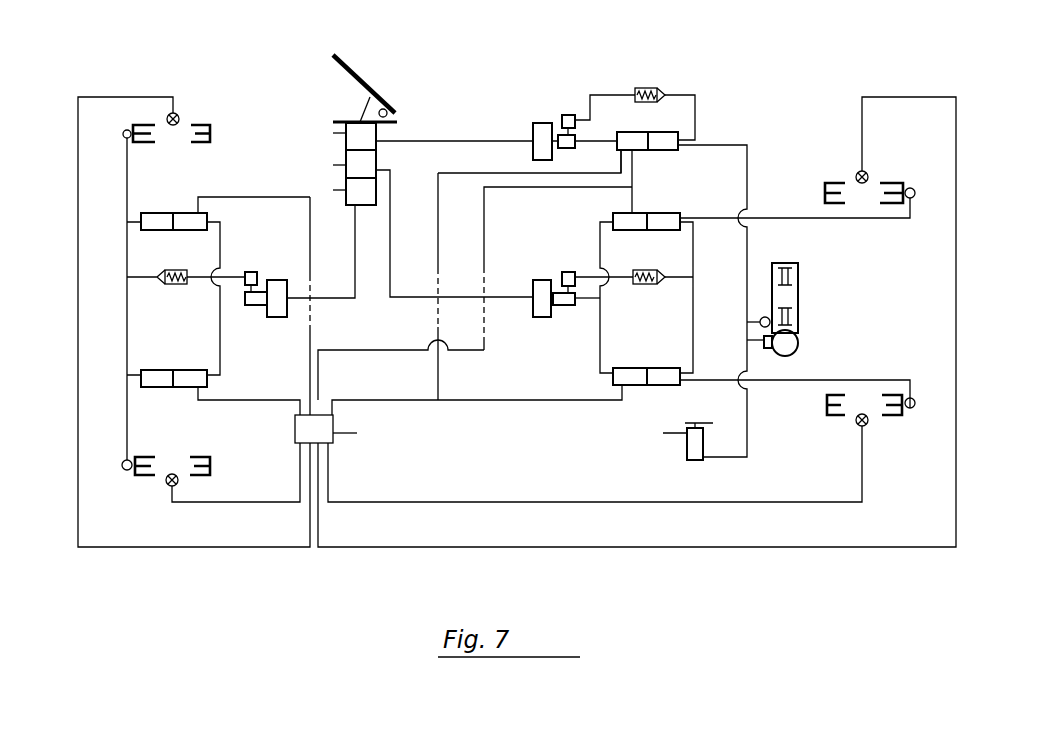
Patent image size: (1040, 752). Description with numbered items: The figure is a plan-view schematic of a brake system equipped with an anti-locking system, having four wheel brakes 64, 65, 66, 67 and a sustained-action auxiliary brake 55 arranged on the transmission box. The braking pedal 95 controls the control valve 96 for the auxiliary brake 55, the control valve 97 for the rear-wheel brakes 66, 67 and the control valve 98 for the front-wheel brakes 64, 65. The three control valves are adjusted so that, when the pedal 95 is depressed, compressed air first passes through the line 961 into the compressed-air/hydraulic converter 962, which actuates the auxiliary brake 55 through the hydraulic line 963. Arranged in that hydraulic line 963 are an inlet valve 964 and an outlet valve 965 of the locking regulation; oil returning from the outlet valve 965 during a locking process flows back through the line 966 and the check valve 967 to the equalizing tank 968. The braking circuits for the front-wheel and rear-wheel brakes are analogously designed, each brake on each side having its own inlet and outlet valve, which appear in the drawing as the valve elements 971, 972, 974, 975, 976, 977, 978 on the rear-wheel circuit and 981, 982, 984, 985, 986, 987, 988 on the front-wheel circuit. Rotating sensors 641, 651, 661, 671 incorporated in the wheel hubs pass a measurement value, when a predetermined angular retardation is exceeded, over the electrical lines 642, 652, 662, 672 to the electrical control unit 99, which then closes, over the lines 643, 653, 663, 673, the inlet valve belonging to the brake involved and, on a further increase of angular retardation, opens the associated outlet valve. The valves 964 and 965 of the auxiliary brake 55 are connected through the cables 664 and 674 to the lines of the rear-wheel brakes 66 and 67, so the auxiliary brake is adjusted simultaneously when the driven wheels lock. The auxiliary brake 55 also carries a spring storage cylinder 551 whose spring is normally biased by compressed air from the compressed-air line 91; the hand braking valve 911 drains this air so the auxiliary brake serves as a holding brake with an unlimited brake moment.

The auxiliary brake 55 is at (800, 295).
The spring storage cylinder 551 is at (800, 347).
The wheel brake 64 is at (203, 142).
The rotating sensor 641 is at (177, 116).
The electrical line 642 is at (78, 300).
The line 643 is at (237, 198).
The wheel brake 65 is at (190, 467).
The rotating sensor 651 is at (170, 486).
The electrical line 652 is at (246, 502).
The line 653 is at (240, 400).
The rear-wheel brake 66 is at (840, 183).
The rotating sensor 661 is at (868, 173).
The electrical line 662 is at (957, 396).
The line 663 is at (347, 352).
The cable 664 is at (632, 190).
The rear-wheel brake 67 is at (833, 417).
The rotating sensor 671 is at (855, 425).
The electrical line 672 is at (525, 500).
The line 673 is at (545, 401).
The cable 674 is at (438, 240).
The compressed-air line 91 is at (748, 433).
The hand braking valve 911 is at (687, 448).
The braking pedal 95 is at (333, 58).
The control valve 96 is at (358, 130).
The line 961 is at (447, 138).
The compressed-air/hydraulic converter 962 is at (537, 127).
The hydraulic line 963 is at (748, 200).
The inlet valve 964 is at (627, 140).
The outlet valve 965 is at (660, 149).
The line 966 is at (732, 80).
The check valve 967 is at (636, 89).
The equalizing tank 968 is at (567, 115).
The control valve 97 is at (358, 166).
The line 971 is at (410, 299).
The valve 972 is at (537, 306).
The valve position 974 is at (628, 228).
The valve position 975 is at (660, 220).
The line 976 is at (685, 278).
The relief valve 977 is at (628, 284).
The pilot control 978 is at (568, 272).
The control valve 98 is at (358, 190).
The line 981 is at (333, 299).
The valve 982 is at (278, 310).
The valve position 984 is at (190, 216).
The valve position 985 is at (160, 218).
The relief valve 986 is at (194, 271).
The spring 987 is at (183, 283).
The pilot control 988 is at (253, 276).
The electrical control unit 99 is at (310, 429).